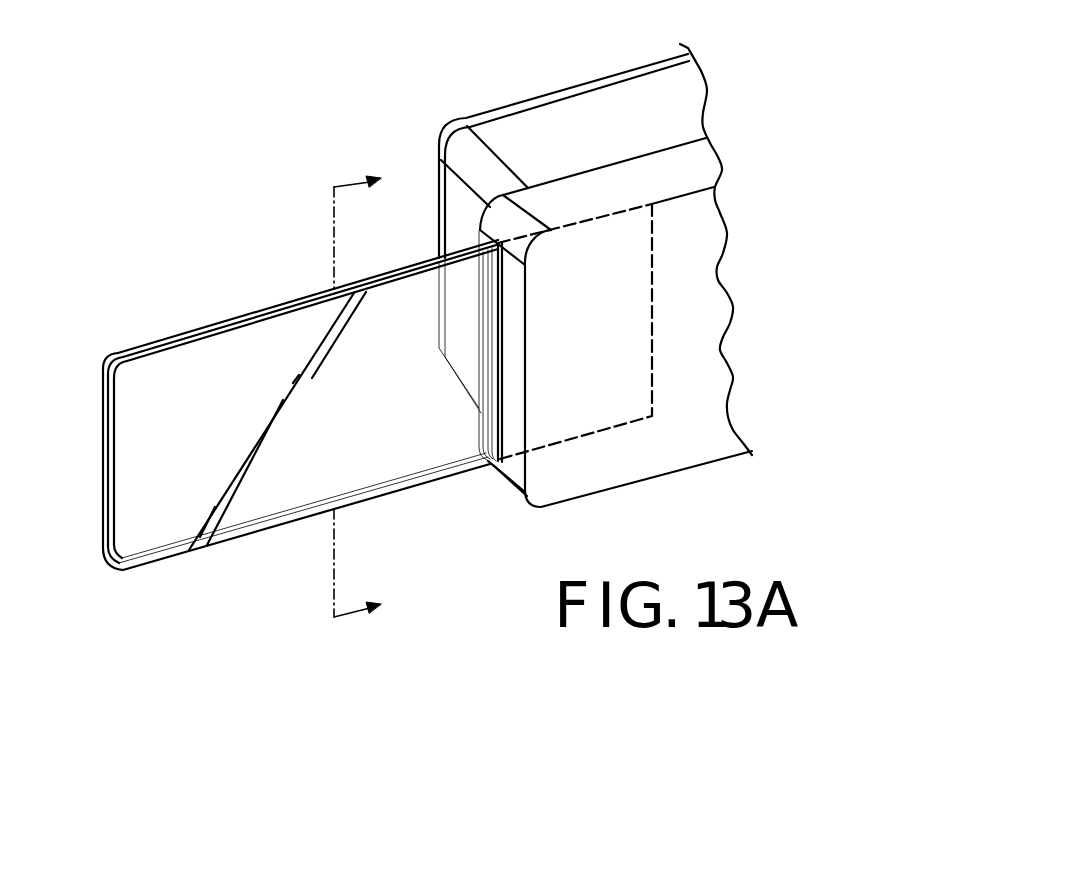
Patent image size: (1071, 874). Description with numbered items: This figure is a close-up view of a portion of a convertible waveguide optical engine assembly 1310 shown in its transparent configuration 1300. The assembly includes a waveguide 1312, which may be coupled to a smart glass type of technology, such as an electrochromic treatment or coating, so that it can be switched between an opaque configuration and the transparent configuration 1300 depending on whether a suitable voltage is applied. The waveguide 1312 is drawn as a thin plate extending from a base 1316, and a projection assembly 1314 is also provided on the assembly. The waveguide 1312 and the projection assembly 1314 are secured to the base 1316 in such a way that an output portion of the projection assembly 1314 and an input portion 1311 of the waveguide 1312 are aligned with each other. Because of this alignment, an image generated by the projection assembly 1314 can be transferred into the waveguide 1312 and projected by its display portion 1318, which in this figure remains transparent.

The transparent configuration 1300 is at (823, 104).
The waveguide optical engine assembly 1310 is at (229, 289).
The input portion 1311 is at (597, 368).
The waveguide 1312 is at (137, 445).
The projection assembly 1314 is at (571, 106).
The base 1316 is at (654, 449).
The display portion 1318 is at (392, 421).